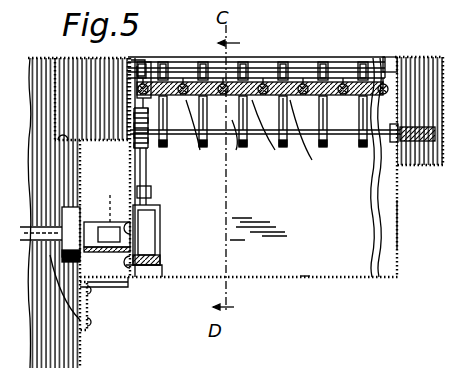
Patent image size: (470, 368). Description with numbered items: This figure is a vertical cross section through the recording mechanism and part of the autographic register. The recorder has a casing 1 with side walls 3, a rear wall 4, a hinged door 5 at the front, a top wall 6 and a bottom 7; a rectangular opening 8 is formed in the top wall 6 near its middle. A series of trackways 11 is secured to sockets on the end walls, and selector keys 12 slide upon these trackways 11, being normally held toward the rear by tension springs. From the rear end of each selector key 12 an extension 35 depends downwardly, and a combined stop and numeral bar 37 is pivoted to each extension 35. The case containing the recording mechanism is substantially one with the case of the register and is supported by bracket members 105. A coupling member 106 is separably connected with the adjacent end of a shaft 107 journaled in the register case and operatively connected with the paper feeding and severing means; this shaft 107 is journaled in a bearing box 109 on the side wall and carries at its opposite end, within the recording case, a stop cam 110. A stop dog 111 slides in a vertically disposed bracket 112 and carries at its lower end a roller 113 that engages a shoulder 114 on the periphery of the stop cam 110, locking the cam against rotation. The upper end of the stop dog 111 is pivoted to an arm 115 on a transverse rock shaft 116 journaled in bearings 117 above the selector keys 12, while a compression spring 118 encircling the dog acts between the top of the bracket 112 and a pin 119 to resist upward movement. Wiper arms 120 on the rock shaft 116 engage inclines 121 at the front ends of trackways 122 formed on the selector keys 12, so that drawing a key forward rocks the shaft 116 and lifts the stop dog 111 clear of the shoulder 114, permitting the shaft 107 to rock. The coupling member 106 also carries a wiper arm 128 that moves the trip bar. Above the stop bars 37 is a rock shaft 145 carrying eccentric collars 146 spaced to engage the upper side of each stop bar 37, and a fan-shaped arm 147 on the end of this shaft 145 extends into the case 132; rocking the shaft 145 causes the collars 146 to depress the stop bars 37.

The casing 1 is at (352, 300).
The side walls 3 is at (123, 273).
The rear wall 4 is at (366, 213).
The door 5 is at (400, 228).
The top wall 6 is at (317, 62).
The bottom 7 is at (300, 278).
The rectangular opening 8 is at (335, 66).
The trackways 11 is at (282, 125).
The selector keys 12 is at (176, 120).
The extension 35 is at (323, 120).
The combined stop and numeral bar 37 is at (310, 120).
The bracket members 105 is at (140, 350).
The coupling member 106 is at (99, 283).
The shaft 107 is at (84, 300).
The bearing box 109 is at (140, 283).
The stop cam 110 is at (198, 269).
The stop dog 111 is at (151, 198).
The bracket 112 is at (147, 185).
The roller 113 is at (160, 225).
The shoulder 114 is at (132, 268).
The arm 115 is at (166, 57).
The rock shaft 116 is at (207, 27).
The bearings 117 is at (126, 62).
The compression spring 118 is at (140, 150).
The pin 119 is at (336, 214).
The wiper arms 120 is at (168, 66).
The inclines 121 is at (268, 34).
The trackways 122 is at (303, 78).
The wiper arm 128 is at (107, 216).
The case 132 is at (430, 45).
The rock shaft 145 is at (222, 165).
The eccentric collars 146 is at (232, 120).
The fan-shaped arm 147 is at (424, 165).